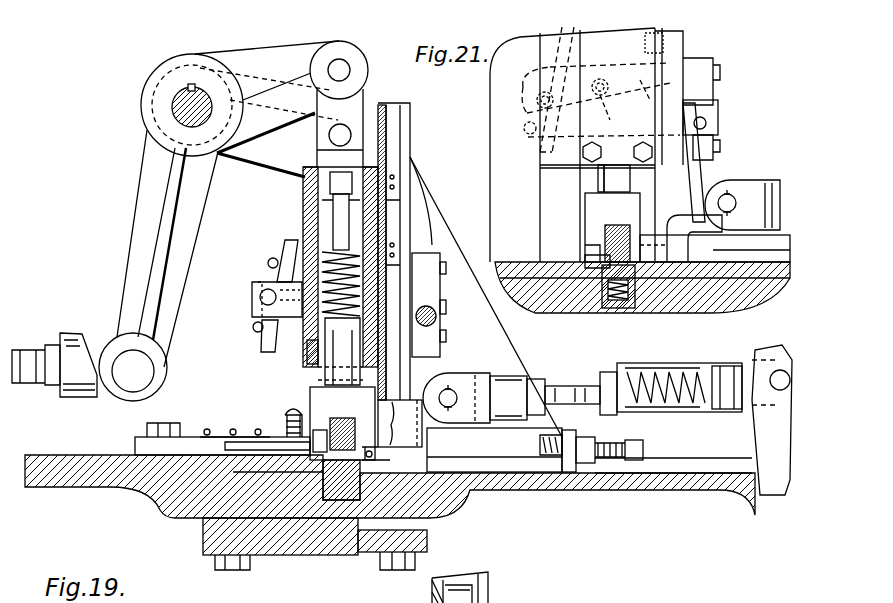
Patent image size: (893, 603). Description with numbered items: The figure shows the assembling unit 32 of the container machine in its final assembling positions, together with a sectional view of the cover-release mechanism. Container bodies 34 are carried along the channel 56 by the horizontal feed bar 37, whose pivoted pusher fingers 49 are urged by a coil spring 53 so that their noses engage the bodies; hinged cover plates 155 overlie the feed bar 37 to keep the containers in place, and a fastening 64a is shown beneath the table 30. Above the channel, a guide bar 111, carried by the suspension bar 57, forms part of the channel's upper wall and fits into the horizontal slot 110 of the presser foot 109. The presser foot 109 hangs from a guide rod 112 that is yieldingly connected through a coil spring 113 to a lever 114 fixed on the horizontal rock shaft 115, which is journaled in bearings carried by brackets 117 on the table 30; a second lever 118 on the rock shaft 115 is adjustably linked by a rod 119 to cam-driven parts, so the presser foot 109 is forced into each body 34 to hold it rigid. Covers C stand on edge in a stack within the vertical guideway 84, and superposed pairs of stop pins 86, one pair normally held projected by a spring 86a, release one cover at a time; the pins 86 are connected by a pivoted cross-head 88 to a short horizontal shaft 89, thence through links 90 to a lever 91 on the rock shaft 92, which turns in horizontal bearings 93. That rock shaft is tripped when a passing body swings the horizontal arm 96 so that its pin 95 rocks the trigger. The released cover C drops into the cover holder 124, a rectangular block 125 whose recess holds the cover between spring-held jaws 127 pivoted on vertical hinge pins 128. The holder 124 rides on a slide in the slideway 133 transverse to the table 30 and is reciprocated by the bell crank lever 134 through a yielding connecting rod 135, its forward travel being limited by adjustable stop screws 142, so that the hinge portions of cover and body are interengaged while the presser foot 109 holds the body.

In FIG. 19, the table 30 is at (110, 478).
In FIG. 21, the table 30 is at (540, 290).
In FIG. 19, the assembling unit 32 is at (460, 196).
In FIG. 19, the container body 34 is at (334, 434).
In FIG. 19, the horizontal feed bar 37 is at (350, 486).
In FIG. 21, the horizontal feed bar 37 is at (612, 300).
In FIG. 21, the pusher finger 49 is at (612, 260).
In FIG. 21, the coil spring 53 is at (632, 300).
In FIG. 19, the channel 56 is at (380, 472).
In FIG. 21, the suspension bar 57 is at (626, 185).
In FIG. 19, the bolt 64a is at (310, 563).
In FIG. 19, the vertical guideway 84 is at (407, 113).
In FIG. 21, the vertical guideway 84 is at (683, 47).
In FIG. 19, the stop pins 86 is at (272, 266).
In FIG. 21, the stop pins 86 is at (545, 70).
In FIG. 21, the spring 86a is at (660, 27).
In FIG. 19, the pivoted cross-head 88 is at (292, 240).
In FIG. 21, the pivoted cross-head 88 is at (558, 84).
In FIG. 19, the short horizontal shaft 89 is at (252, 306).
In FIG. 21, the short horizontal shaft 89 is at (538, 100).
In FIG. 21, the links 90 is at (612, 108).
In FIG. 19, the lever 91 is at (300, 345).
In FIG. 21, the lever 91 is at (690, 170).
In FIG. 19, the rock shaft 92 is at (445, 318).
In FIG. 21, the rock shaft 92 is at (715, 115).
In FIG. 19, the horizontal bearings 93 is at (428, 350).
In FIG. 21, the horizontal bearings 93 is at (705, 88).
In FIG. 21, the pin 95 is at (713, 262).
In FIG. 21, the horizontal arm 96 is at (673, 278).
In FIG. 19, the presser foot 109 is at (325, 385).
In FIG. 21, the presser foot 109 is at (598, 206).
In FIG. 19, the horizontal slot 110 is at (358, 398).
In FIG. 21, the horizontal slot 110 is at (627, 226).
In FIG. 19, the guide bar 111 is at (350, 420).
In FIG. 21, the guide bar 111 is at (605, 228).
In FIG. 19, the guide rod 112 is at (337, 363).
In FIG. 21, the guide rod 112 is at (600, 180).
In FIG. 19, the coil spring 113 is at (325, 248).
In FIG. 19, the lever 114 is at (268, 36).
In FIG. 19, the horizontal rock shaft 115 is at (178, 100).
In FIG. 19, the brackets 117 is at (255, 155).
In FIG. 19, the lever 118 is at (137, 220).
In FIG. 19, the rod 119 is at (35, 355).
In FIG. 19, the cover holder 124 is at (436, 442).
In FIG. 21, the cover holder 124 is at (716, 250).
In FIG. 19, the rectangular block 125 is at (478, 465).
In FIG. 21, the rectangular block 125 is at (653, 238).
In FIG. 19, the jaws 127 is at (400, 423).
In FIG. 21, the jaws 127 is at (663, 229).
In FIG. 19, the vertical hinge pins 128 is at (430, 378).
In FIG. 19, the slideway 133 is at (690, 470).
In FIG. 19, the bell crank lever 134 is at (763, 427).
In FIG. 19, the yielding connecting rod 135 is at (710, 352).
In FIG. 21, the yielding connecting rod 135 is at (780, 180).
In FIG. 19, the adjustable stop screws 142 is at (631, 442).
In FIG. 19, the hinged cover plates 155 is at (270, 440).
In FIG. 19, the cover C is at (405, 140).